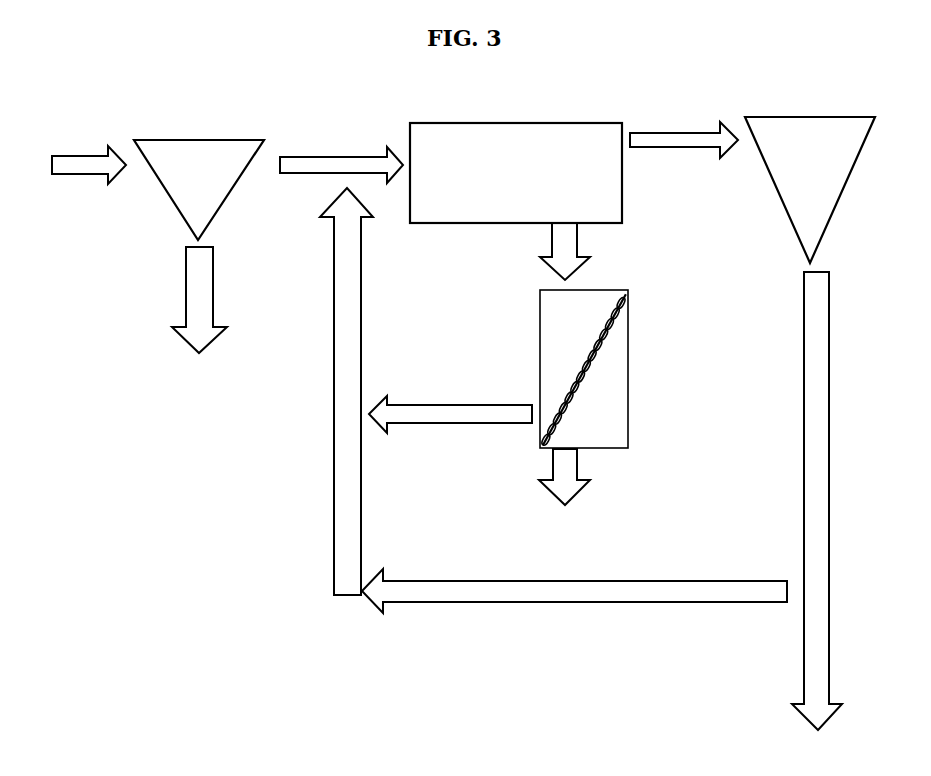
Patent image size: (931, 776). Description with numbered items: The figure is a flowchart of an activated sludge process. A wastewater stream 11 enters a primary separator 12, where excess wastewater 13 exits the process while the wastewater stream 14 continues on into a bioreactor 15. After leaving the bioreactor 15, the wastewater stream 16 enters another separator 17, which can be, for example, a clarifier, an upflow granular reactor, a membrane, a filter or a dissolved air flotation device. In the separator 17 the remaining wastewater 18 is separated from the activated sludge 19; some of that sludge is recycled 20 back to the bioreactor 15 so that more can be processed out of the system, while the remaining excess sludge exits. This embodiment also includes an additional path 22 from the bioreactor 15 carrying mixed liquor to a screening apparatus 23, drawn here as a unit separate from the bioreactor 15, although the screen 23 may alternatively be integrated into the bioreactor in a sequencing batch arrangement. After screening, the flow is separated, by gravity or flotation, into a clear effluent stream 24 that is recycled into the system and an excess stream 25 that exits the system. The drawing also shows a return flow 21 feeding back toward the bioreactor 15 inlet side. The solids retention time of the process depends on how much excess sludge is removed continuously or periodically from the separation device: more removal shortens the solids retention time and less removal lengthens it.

The wastewater stream 11 is at (50, 162).
The primary separator 12 is at (134, 140).
The excess wastewater 13 is at (177, 340).
The wastewater stream 14 is at (327, 153).
The bioreactor 15 is at (419, 123).
The wastewater stream 16 is at (636, 130).
The separator 17 is at (745, 116).
The remaining wastewater 18 is at (810, 305).
The activated sludge 19 is at (806, 718).
The recycled sludge 20 is at (572, 604).
The recycle feed stream 21 is at (345, 488).
The additional path 22 is at (550, 275).
The screening apparatus 23 is at (540, 345).
The clear effluent stream 24 is at (490, 425).
The excess stream 25 is at (595, 482).